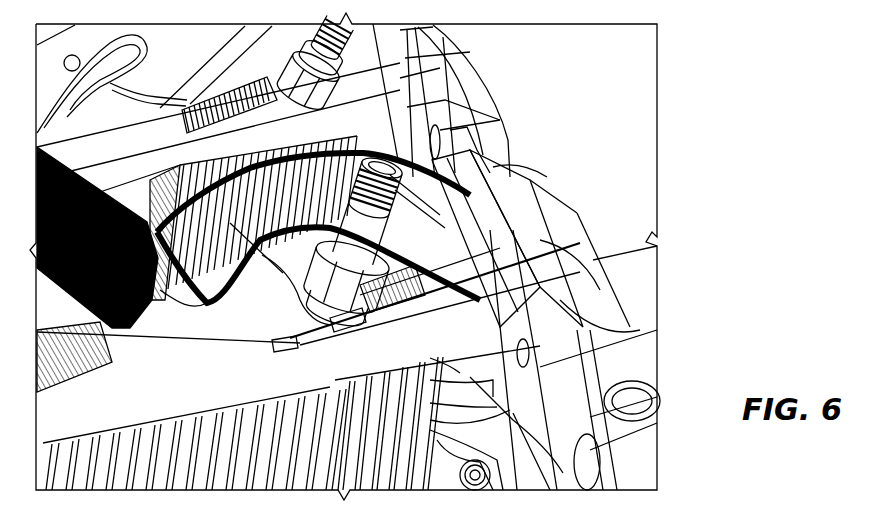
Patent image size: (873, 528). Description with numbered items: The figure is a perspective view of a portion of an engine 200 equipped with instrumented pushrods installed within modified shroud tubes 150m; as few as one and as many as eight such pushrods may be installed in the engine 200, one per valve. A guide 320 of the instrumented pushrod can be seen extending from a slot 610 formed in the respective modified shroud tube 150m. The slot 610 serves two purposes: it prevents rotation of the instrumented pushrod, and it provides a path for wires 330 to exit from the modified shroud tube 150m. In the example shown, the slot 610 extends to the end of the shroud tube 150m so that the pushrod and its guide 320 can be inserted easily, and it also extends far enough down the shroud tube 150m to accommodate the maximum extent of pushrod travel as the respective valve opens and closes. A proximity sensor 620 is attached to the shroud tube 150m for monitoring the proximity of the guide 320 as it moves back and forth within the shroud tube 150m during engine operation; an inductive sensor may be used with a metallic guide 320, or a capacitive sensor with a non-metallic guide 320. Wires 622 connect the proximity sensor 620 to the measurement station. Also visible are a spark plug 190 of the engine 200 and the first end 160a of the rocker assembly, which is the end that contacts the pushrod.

The engine 200 is at (766, 118).
The modified shroud tube 150m is at (173, 404).
The first end of rocker assembly 160a is at (657, 240).
The spark plug 190 is at (363, 260).
The guide 320 is at (347, 330).
The wire 330 is at (440, 305).
The slot 610 is at (387, 318).
The proximity sensor 620 is at (290, 345).
The wire 622 is at (228, 342).